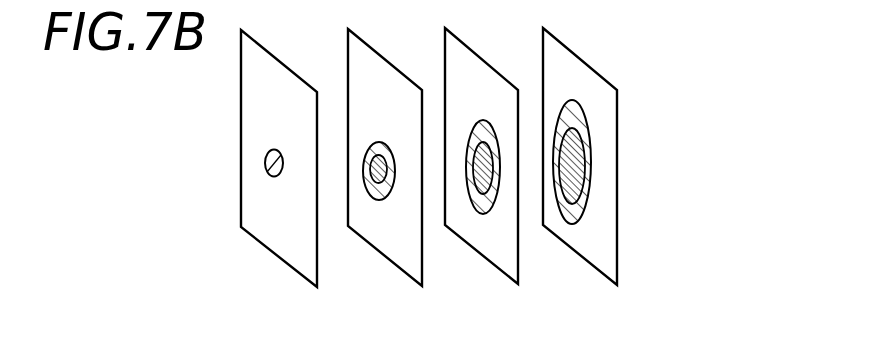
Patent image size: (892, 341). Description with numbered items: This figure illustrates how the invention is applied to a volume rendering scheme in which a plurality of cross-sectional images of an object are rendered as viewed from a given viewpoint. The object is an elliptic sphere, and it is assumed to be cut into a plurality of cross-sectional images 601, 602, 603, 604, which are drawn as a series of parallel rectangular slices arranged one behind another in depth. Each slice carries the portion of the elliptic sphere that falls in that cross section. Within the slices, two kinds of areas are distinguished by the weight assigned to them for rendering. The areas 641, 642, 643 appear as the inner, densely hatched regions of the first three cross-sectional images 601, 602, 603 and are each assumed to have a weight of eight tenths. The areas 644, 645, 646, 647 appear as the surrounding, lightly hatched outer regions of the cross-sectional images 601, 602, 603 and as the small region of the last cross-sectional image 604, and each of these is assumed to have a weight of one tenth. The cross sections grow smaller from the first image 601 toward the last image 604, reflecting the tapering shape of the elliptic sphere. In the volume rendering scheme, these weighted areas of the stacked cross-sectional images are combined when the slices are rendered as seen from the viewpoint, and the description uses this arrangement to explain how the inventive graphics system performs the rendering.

The cross-sectional image 601 is at (617, 275).
The cross-sectional image 602 is at (518, 274).
The cross-sectional image 603 is at (422, 275).
The cross-sectional image 604 is at (317, 275).
The area 641 is at (590, 165).
The area 642 is at (483, 202).
The area 643 is at (382, 200).
The area 644 is at (577, 110).
The area 645 is at (482, 122).
The area 646 is at (375, 141).
The area 647 is at (275, 150).